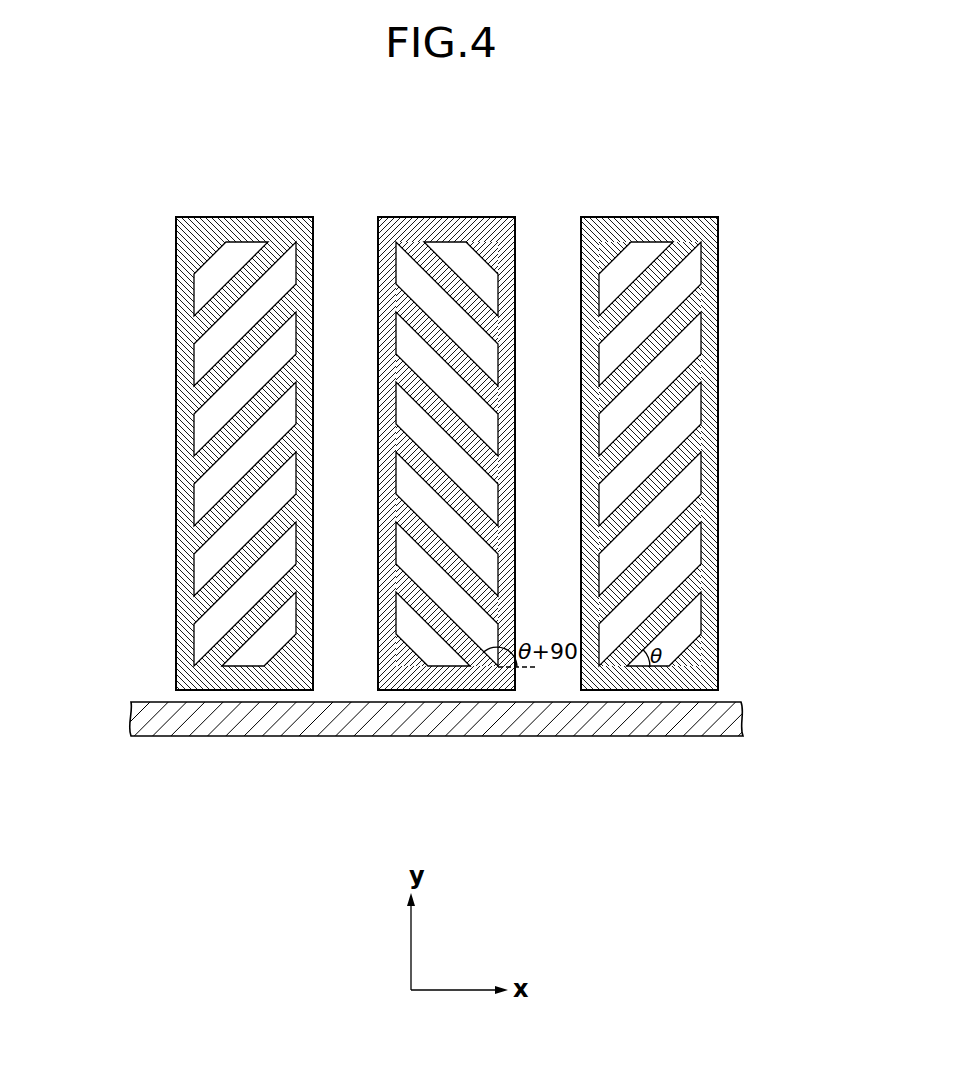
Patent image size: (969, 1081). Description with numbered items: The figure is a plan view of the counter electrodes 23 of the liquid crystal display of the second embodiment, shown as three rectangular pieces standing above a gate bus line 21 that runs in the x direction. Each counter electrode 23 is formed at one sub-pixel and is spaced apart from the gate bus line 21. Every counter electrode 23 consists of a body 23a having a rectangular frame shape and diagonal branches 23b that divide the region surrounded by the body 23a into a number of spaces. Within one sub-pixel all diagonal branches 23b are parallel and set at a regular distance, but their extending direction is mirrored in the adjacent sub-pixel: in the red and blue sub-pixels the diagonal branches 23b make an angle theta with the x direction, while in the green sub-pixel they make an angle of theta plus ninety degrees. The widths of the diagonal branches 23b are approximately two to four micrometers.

The gate bus line 21 is at (128, 718).
The counter electrode 23 is at (518, 453).
The body 23a is at (716, 395).
The diagonal branch 23b is at (716, 444).